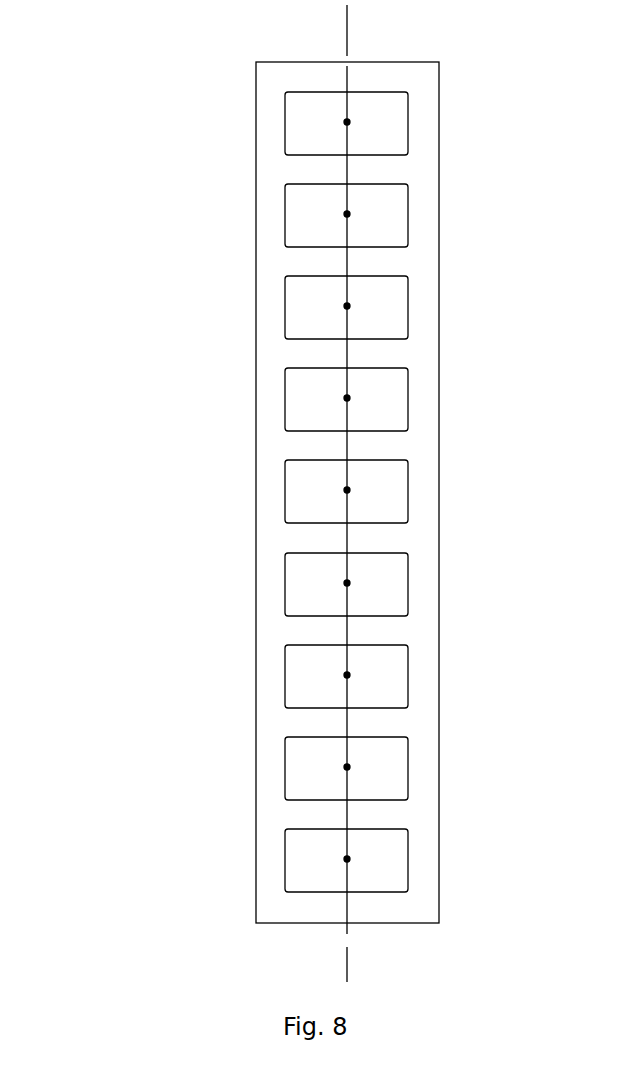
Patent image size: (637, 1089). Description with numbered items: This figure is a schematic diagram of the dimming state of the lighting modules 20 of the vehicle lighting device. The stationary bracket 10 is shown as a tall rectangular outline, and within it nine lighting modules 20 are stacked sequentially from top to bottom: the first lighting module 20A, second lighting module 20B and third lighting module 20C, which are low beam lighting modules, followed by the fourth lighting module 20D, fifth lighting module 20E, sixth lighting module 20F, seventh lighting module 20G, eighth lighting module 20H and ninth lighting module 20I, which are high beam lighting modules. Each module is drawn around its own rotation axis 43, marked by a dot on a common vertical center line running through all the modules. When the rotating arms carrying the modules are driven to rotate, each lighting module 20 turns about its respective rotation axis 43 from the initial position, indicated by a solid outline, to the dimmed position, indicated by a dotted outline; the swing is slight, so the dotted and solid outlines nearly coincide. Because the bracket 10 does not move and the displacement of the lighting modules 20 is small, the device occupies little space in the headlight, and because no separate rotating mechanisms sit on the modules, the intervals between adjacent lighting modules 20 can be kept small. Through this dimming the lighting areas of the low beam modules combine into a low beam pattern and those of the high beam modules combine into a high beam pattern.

The bracket 10 is at (282, 910).
The lighting modules 20 is at (108, 59).
The first lighting module 20A is at (305, 117).
The second lighting module 20B is at (305, 209).
The third lighting module 20C is at (305, 301).
The fourth lighting module 20D is at (305, 393).
The fifth lighting module 20E is at (305, 485).
The sixth lighting module 20F is at (305, 578).
The seventh lighting module 20G is at (305, 670).
The eighth lighting module 20H is at (305, 762).
The ninth lighting module 20I is at (305, 854).
The rotation axis 43 is at (350, 122).